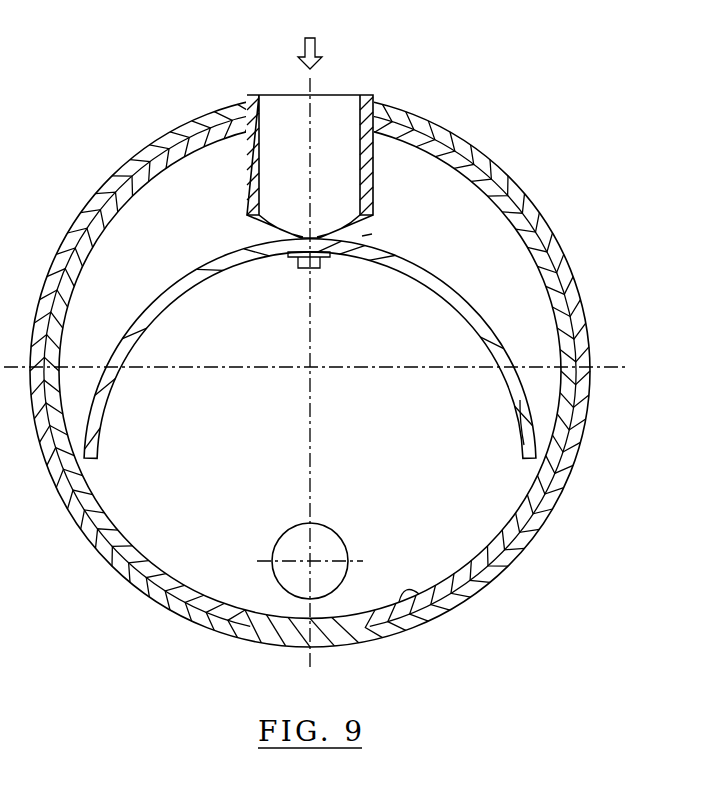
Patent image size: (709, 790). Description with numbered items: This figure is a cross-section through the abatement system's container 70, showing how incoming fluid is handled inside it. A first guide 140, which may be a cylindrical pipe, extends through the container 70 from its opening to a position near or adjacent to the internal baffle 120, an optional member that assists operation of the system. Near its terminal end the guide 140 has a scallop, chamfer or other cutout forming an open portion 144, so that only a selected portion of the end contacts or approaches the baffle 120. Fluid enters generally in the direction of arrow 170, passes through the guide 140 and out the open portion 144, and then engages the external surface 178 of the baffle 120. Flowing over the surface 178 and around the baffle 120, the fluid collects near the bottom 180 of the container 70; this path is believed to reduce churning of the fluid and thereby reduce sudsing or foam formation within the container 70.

The container 70 is at (557, 241).
The internal baffle 120 is at (503, 341).
The first guide 140 is at (247, 178).
The open portion 144 is at (362, 236).
The arrow 170 is at (300, 48).
The external surface 178 is at (527, 411).
The bottom 180 is at (420, 594).